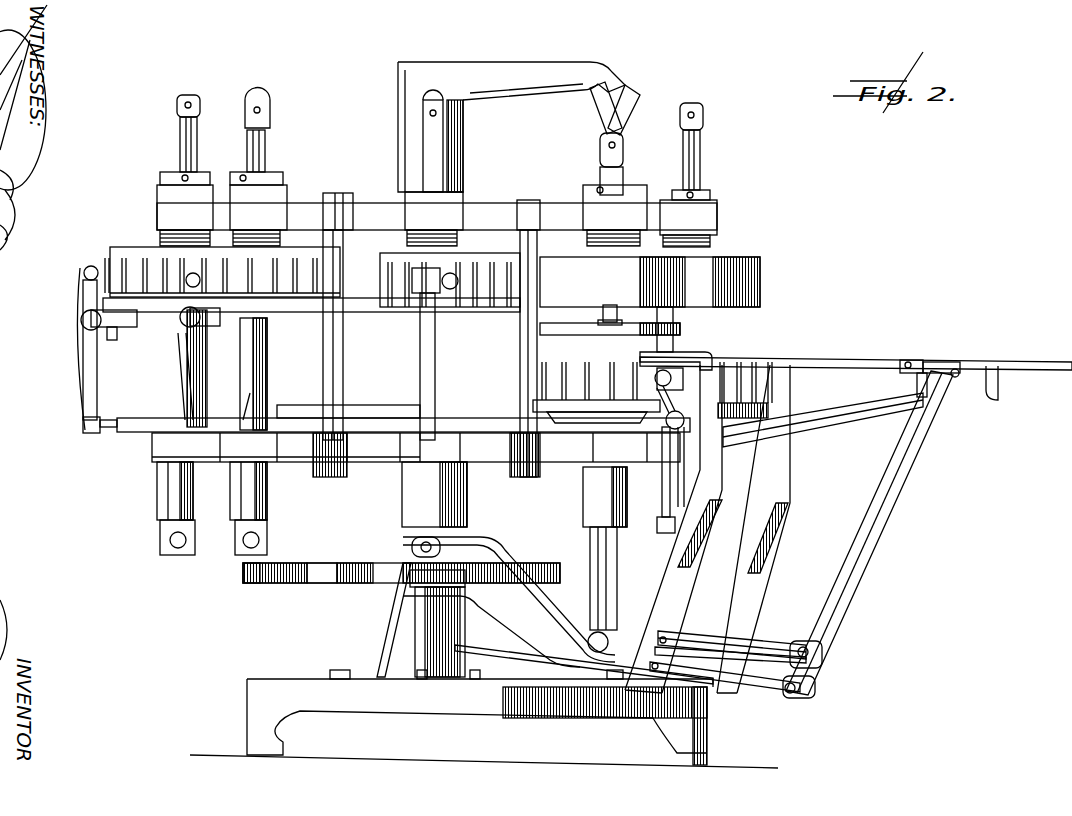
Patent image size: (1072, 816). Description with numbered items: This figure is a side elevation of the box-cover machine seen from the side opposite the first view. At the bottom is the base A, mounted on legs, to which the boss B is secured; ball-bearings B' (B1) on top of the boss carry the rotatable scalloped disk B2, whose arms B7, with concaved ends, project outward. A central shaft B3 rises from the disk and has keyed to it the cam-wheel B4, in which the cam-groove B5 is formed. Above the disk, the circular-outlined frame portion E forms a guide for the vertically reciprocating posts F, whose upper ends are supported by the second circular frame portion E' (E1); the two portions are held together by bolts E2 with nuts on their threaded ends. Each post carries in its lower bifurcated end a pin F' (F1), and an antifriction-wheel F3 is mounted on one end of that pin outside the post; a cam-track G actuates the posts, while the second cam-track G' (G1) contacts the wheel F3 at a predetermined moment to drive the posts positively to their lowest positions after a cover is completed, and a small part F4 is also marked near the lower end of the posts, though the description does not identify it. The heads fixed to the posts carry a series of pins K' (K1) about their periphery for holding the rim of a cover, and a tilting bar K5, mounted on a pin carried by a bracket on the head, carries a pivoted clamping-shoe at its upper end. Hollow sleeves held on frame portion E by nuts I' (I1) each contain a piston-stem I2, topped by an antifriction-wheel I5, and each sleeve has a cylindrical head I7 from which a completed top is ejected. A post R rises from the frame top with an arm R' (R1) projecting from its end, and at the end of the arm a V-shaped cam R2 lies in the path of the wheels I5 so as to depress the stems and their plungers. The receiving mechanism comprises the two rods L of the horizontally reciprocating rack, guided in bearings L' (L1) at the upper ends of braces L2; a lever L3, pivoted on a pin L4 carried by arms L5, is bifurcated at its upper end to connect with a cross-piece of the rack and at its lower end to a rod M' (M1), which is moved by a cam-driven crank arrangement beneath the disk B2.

The arm R' is at (511, 66).
The post R is at (412, 154).
The V-shaped cam R2 is at (615, 86).
The antifriction-wheel I5 is at (262, 96).
The piston-stem I2 is at (197, 157).
The nut I' is at (438, 280).
The second circular portion of the frame E' is at (437, 200).
The pins K' is at (298, 329).
The cylindrical head I7 is at (778, 283).
The bolts E2 is at (343, 349).
The cam-wheel B4 is at (477, 417).
The circular-outlined portion of the frame E is at (389, 455).
The reciprocating posts F is at (187, 500).
The antifriction-wheel F3 is at (193, 557).
The arms B7 is at (337, 566).
The cam-groove B5 is at (303, 583).
The rotatable scalloped disk B2 is at (243, 575).
The ball-bearings B' is at (377, 620).
The central shaft B3 is at (467, 500).
The knob F4 is at (410, 543).
The second cam-track G' is at (509, 593).
The tilting bar K5 is at (672, 475).
The pin F' is at (618, 559).
The rods L is at (856, 347).
The bearings L' is at (930, 360).
The braces L2 is at (993, 402).
The lever L3 is at (863, 568).
The arms L5 is at (753, 643).
The pin L4 is at (822, 655).
The rod M' is at (732, 694).
The boss B is at (432, 660).
The cam-track G is at (584, 693).
The base A is at (257, 732).
The arm R1 is at (511, 66).
The nut I1 is at (438, 280).
The second circular portion of the frame E1 is at (437, 200).
The pins K1 is at (298, 329).
The ball-bearings B1 is at (377, 620).
The second cam-track G1 is at (509, 593).
The pin F1 is at (618, 559).
The bearings L1 is at (930, 360).
The rod M1 is at (732, 694).